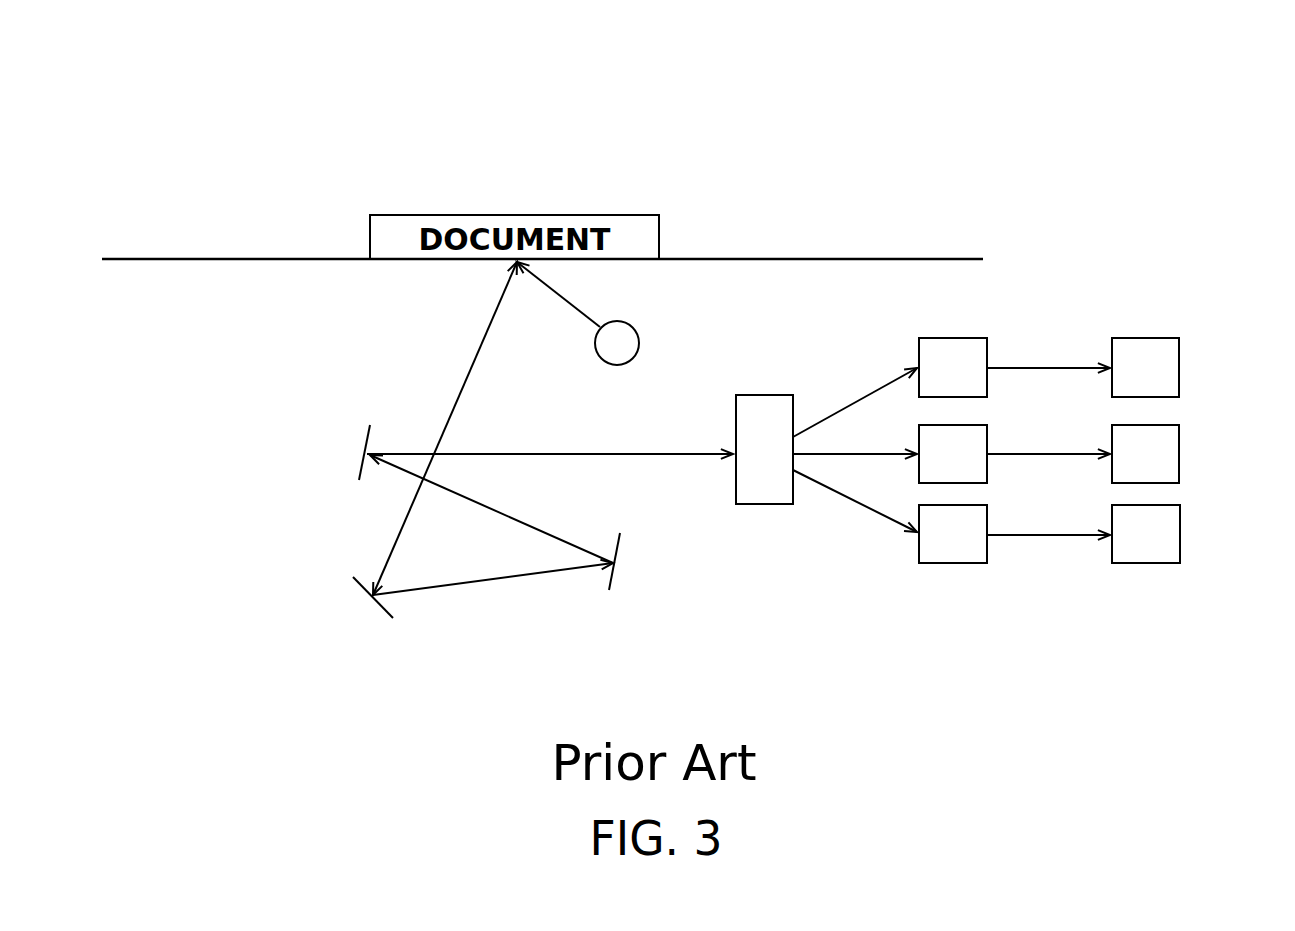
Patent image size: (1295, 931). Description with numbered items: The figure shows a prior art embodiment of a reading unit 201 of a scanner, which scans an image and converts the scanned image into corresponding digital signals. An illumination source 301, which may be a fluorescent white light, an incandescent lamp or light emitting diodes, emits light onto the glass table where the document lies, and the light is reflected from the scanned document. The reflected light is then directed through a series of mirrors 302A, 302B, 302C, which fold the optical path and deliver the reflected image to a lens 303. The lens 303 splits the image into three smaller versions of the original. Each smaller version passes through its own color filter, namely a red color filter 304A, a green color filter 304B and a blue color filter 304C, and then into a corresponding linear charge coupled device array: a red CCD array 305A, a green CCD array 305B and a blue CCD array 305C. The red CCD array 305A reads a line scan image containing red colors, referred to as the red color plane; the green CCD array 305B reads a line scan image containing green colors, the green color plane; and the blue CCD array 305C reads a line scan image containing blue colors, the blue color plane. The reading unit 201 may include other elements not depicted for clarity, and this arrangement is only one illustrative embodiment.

The reading unit 201 is at (835, 148).
The illumination source 301 is at (630, 340).
The mirror 302A is at (381, 605).
The mirror 302B is at (615, 570).
The mirror 302C is at (365, 445).
The lens 303 is at (765, 487).
The red color filter 304A is at (950, 350).
The green color filter 304B is at (970, 434).
The blue color filter 304C is at (955, 553).
The red CCD array 305A is at (1146, 350).
The green CCD array 305B is at (1170, 435).
The blue CCD array 305C is at (1149, 553).